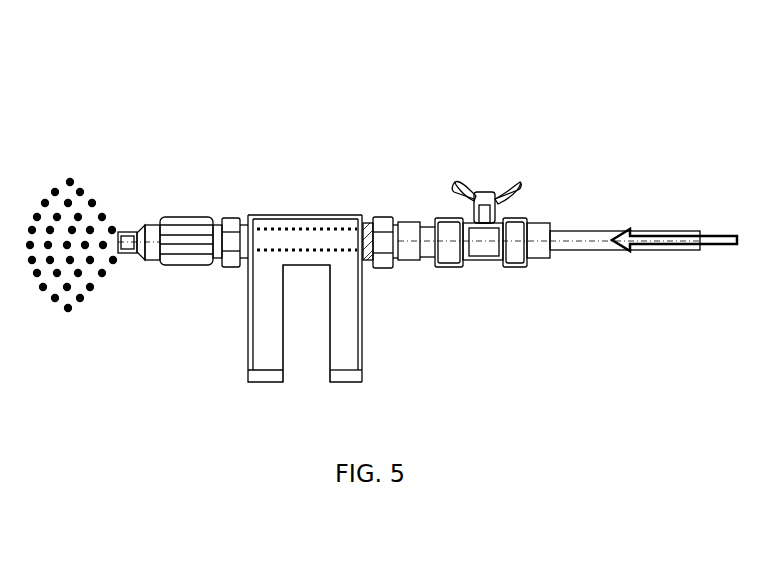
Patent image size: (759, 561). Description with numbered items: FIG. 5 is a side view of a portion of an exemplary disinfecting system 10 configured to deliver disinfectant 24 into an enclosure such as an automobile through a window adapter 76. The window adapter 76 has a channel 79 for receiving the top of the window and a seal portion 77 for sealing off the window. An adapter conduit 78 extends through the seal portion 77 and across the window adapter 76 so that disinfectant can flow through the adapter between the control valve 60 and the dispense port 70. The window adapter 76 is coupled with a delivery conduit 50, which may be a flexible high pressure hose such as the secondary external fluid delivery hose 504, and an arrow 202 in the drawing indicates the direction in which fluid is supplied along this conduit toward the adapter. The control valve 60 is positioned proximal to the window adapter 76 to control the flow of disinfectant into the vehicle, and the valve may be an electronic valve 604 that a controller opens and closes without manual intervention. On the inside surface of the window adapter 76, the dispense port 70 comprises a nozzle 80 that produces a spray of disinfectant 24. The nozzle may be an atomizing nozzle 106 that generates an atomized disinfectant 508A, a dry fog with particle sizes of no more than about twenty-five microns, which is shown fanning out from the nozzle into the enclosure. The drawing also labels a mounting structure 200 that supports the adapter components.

The disinfecting system 10 is at (268, 130).
The disinfectant 24 is at (82, 198).
The atomized disinfectant 508A is at (62, 287).
The nozzle 80 is at (138, 232).
The atomizing nozzle 106 is at (126, 255).
The dispense port 70 is at (200, 218).
The seal portion 77 is at (350, 223).
The mounting bracket 200 is at (262, 327).
The window adapter 76 is at (327, 222).
The adapter conduit 78 is at (282, 240).
The channel 79 is at (298, 357).
The electronic valve 604 is at (490, 243).
The control valve 60 is at (497, 190).
The delivery conduit 50 is at (587, 247).
The secondary external fluid delivery hose 504 is at (605, 243).
The flow direction arrow 202 is at (707, 243).